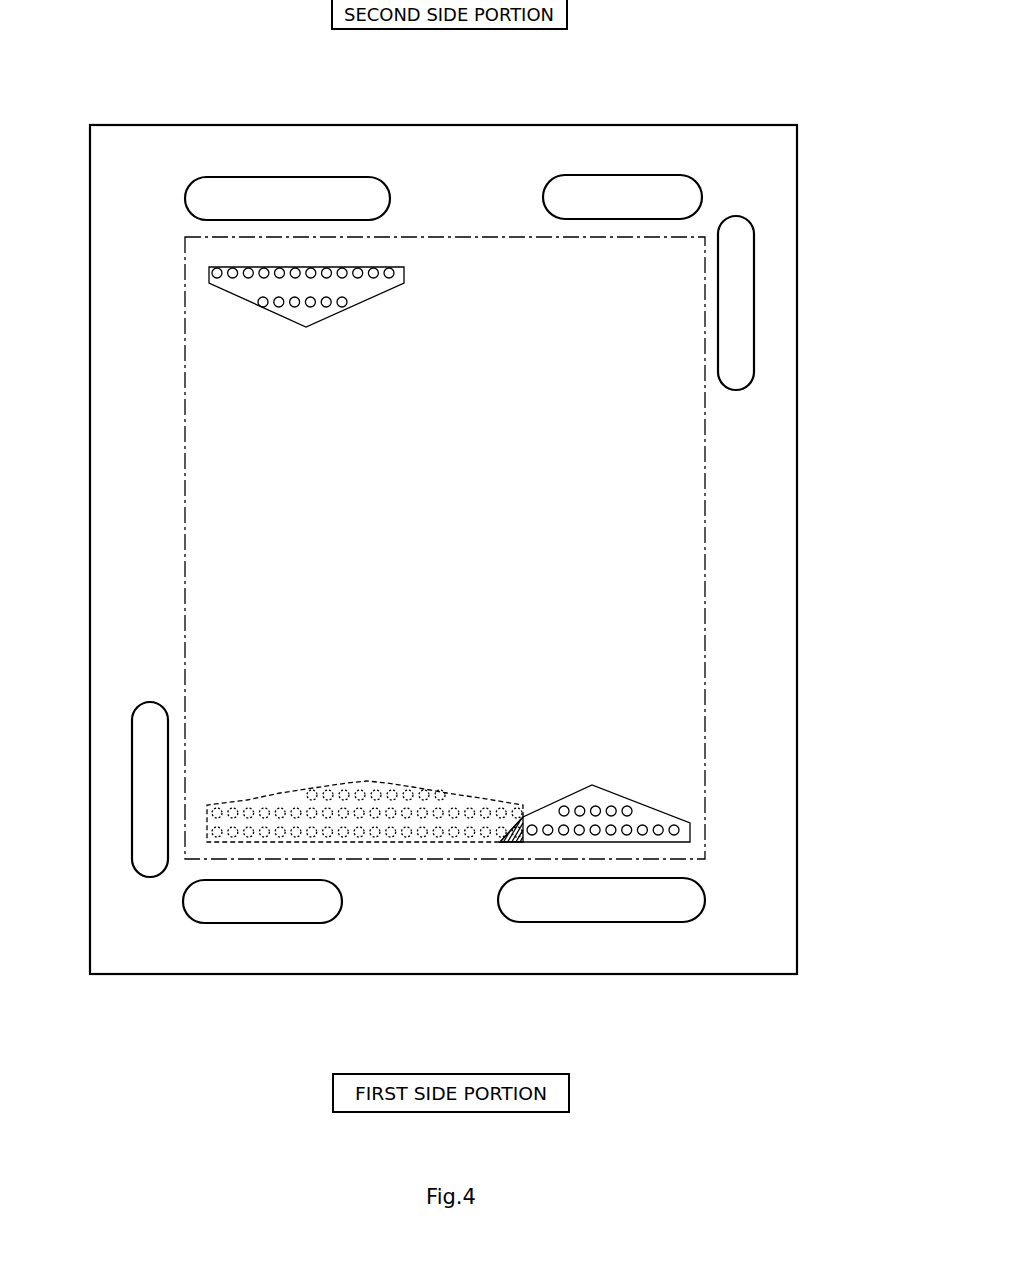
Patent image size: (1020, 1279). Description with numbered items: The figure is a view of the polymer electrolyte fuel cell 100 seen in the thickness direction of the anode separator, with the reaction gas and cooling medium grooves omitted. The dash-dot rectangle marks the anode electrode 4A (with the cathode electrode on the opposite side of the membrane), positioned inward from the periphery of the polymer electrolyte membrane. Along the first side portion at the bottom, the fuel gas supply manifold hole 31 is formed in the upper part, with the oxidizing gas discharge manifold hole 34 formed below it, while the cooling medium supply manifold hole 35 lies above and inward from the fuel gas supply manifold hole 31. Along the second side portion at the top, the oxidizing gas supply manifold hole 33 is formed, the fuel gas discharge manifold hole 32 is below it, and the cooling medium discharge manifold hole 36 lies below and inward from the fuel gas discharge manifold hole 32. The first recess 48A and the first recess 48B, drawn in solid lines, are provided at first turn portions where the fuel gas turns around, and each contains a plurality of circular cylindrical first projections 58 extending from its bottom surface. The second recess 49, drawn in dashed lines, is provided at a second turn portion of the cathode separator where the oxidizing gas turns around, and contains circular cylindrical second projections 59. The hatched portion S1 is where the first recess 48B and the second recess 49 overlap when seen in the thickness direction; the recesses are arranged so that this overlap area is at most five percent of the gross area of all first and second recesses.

The fuel cell 100 is at (80, 571).
The anode electrode 4A is at (707, 753).
The fuel gas supply manifold hole 31 is at (260, 896).
The fuel gas discharge manifold hole 32 is at (628, 197).
The oxidizing gas supply manifold hole 33 is at (288, 198).
The oxidizing gas discharge manifold hole 34 is at (610, 907).
The cooling medium supply manifold hole 35 is at (147, 783).
The cooling medium discharge manifold hole 36 is at (735, 302).
The first recess 48A is at (241, 267).
The first recess 48B is at (554, 842).
The second recess 49 is at (304, 842).
The first projections 58 is at (343, 268).
The second projections 59 is at (375, 842).
The portion S1 is at (512, 842).